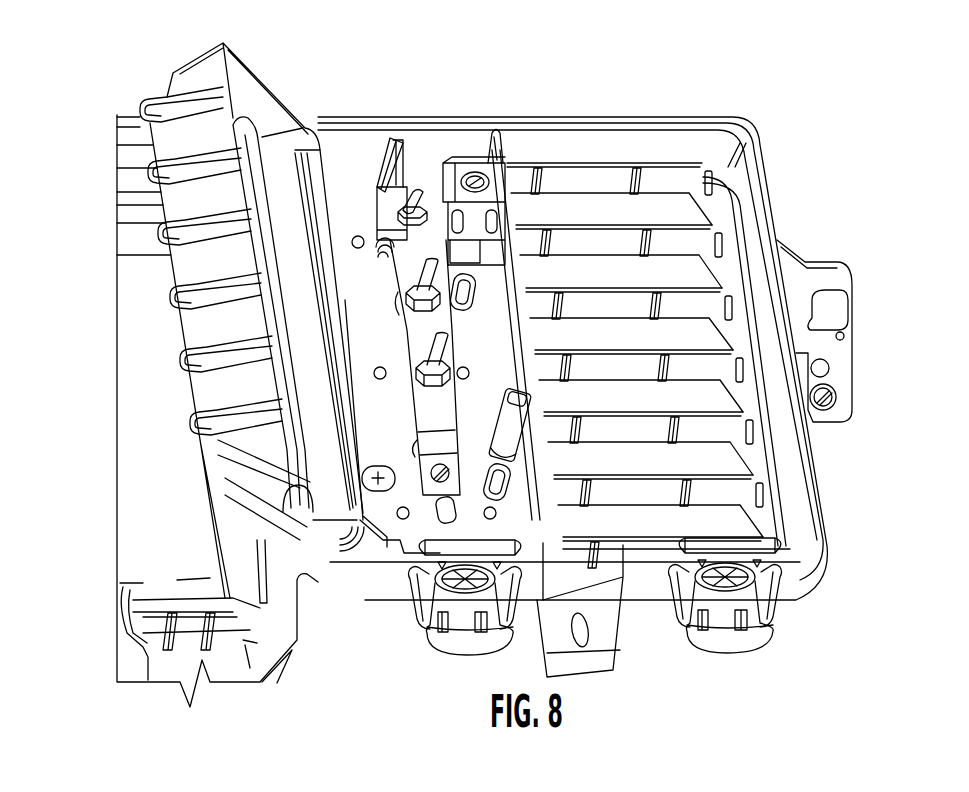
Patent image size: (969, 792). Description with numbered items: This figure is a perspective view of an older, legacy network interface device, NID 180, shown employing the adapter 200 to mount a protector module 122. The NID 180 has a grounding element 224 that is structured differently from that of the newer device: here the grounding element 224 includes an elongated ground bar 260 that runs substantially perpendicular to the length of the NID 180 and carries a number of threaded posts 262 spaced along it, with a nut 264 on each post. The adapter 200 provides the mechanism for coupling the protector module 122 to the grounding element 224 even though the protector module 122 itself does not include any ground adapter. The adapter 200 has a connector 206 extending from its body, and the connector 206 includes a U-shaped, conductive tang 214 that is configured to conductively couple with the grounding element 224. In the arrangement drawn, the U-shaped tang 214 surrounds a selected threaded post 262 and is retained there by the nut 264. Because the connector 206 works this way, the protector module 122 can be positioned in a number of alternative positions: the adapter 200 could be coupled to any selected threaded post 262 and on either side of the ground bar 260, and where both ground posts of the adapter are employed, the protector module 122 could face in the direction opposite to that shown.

The NID 180 is at (584, 118).
The connector 206 is at (214, 323).
The U-shaped conductive tang 214 is at (390, 256).
The adapter 200 is at (392, 192).
The protector module 122 is at (516, 150).
The threaded posts 262 is at (447, 356).
The elongated ground bar 260 is at (430, 392).
The nut 264 is at (522, 378).
The grounding element 224 is at (440, 430).